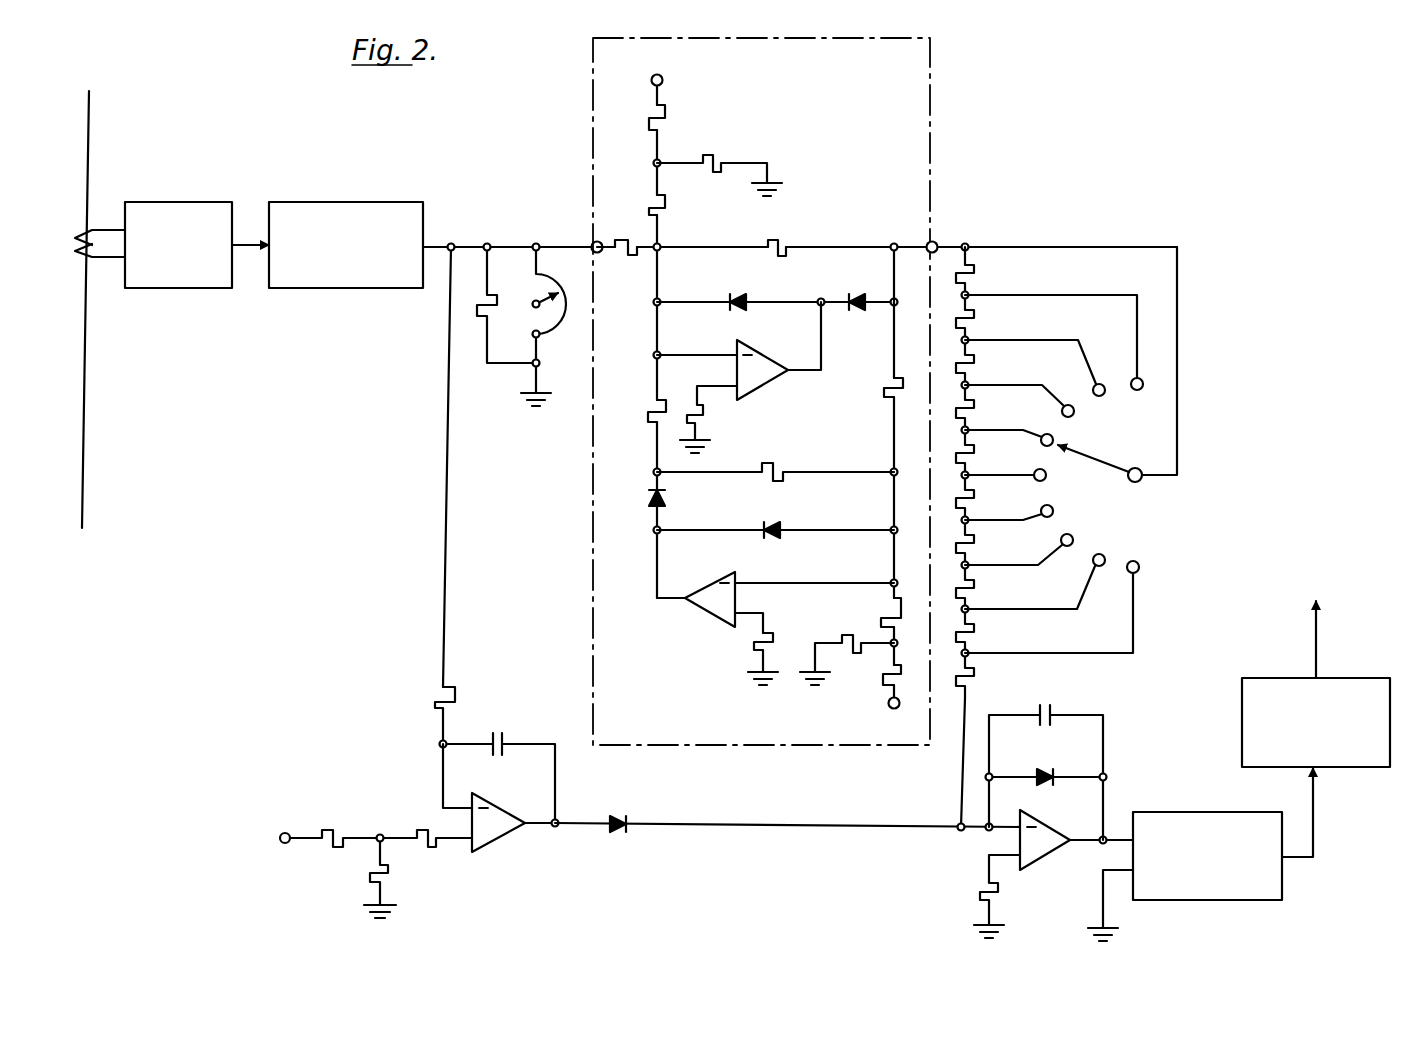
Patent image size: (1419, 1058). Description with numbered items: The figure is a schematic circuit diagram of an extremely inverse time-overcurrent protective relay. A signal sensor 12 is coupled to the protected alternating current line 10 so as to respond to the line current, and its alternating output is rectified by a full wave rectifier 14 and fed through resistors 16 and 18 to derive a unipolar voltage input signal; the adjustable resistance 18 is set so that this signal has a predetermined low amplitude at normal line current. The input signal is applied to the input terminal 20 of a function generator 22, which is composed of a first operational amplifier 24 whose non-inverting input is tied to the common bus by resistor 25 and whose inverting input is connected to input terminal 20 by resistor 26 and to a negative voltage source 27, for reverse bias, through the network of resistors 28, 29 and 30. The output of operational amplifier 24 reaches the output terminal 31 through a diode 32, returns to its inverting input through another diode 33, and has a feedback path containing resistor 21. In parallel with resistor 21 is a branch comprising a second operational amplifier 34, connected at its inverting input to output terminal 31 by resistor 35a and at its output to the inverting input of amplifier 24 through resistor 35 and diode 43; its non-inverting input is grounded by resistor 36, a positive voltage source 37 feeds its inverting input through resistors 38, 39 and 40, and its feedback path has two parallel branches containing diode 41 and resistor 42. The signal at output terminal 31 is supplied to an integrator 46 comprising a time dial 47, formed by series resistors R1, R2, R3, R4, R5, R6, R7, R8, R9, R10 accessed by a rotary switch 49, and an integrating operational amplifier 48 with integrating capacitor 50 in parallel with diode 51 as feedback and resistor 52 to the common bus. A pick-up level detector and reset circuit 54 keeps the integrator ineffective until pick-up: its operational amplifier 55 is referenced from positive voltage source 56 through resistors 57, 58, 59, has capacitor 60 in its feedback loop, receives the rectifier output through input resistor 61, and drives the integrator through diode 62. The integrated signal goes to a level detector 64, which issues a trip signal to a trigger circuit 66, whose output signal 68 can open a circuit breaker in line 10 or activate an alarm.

The alternating current line 10 is at (85, 382).
The signal sensor 12 is at (175, 200).
The full wave rectifier 14 is at (343, 200).
The resistor 16 is at (497, 300).
The adjustable resistance 18 is at (545, 330).
The input terminal 20 is at (592, 243).
The resistor 21 is at (775, 235).
The function generator 22 is at (590, 543).
The first operational amplifier 24 is at (774, 364).
The resistor 25 is at (708, 406).
The resistor 26 is at (633, 262).
The negative voltage source 27 is at (664, 82).
The resistor 28 is at (668, 118).
The resistor 29 is at (712, 168).
The resistor 30 is at (650, 205).
The output terminal 31 is at (938, 244).
The diode 32 is at (853, 296).
The diode 33 is at (736, 295).
The second operational amplifier 34 is at (712, 604).
The resistor 35 is at (648, 412).
The resistor 35a is at (883, 393).
The resistor 36 is at (753, 646).
The positive voltage source 37 is at (888, 701).
The resistor 38 is at (898, 666).
The resistor 39 is at (898, 598).
The resistor 40 is at (848, 635).
The diode 41 is at (778, 524).
The resistor 42 is at (775, 462).
The diode 43 is at (665, 500).
The integrator 46 is at (1066, 887).
The time dial 47 is at (1148, 512).
The integrating operational amplifier 48 is at (1050, 835).
The rotary switch 49 is at (1105, 462).
The integrating capacitor 50 is at (1055, 712).
The diode 51 is at (1046, 770).
The resistor 52 is at (978, 892).
The pick-up level detector and reset circuit 54 is at (507, 877).
The operational amplifier 55 is at (503, 812).
The positive voltage source 56 is at (288, 845).
The resistor 57 is at (330, 830).
The resistor 58 is at (389, 870).
The resistor 59 is at (420, 830).
The capacitor 60 is at (497, 731).
The input resistor 61 is at (435, 702).
The diode 62 is at (616, 832).
The level detector 64 is at (1208, 812).
The trigger circuit 66 is at (1271, 678).
The output signal 68 is at (1320, 641).
The resistor R1 is at (975, 671).
The resistor R2 is at (975, 627).
The resistor R3 is at (975, 583).
The resistor R4 is at (975, 538).
The resistor R5 is at (975, 493).
The resistor R6 is at (975, 448).
The resistor R7 is at (975, 403).
The resistor R8 is at (975, 358).
The resistor R9 is at (975, 313).
The resistor R10 is at (975, 268).